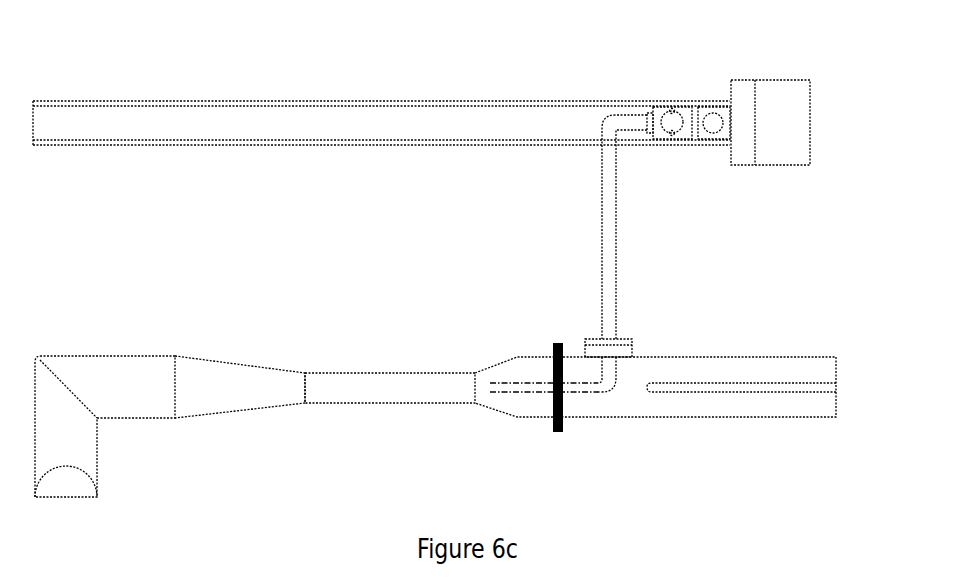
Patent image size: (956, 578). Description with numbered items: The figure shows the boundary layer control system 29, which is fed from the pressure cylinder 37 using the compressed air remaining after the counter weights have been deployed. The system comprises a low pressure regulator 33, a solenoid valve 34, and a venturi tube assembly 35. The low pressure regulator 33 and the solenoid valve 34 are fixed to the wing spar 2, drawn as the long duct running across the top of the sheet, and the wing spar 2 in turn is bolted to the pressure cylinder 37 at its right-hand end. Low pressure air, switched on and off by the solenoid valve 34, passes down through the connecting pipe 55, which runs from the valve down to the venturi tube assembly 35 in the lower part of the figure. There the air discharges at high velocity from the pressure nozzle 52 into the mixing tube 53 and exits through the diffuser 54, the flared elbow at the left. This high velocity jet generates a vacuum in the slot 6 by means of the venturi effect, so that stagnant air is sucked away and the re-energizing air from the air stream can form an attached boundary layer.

The wing spar 2 is at (285, 115).
The boundary layer control system 29 is at (381, 84).
The low pressure regulator 33 is at (707, 102).
The solenoid valve 34 is at (677, 112).
The venturi tube assembly 35 is at (538, 317).
The pressure cylinder 37 is at (775, 97).
The pressure nozzle 52 is at (520, 393).
The mixing tube 53 is at (438, 380).
The diffuser 54 is at (103, 408).
The connecting pipe 55 is at (610, 222).
The slot 6 is at (725, 383).